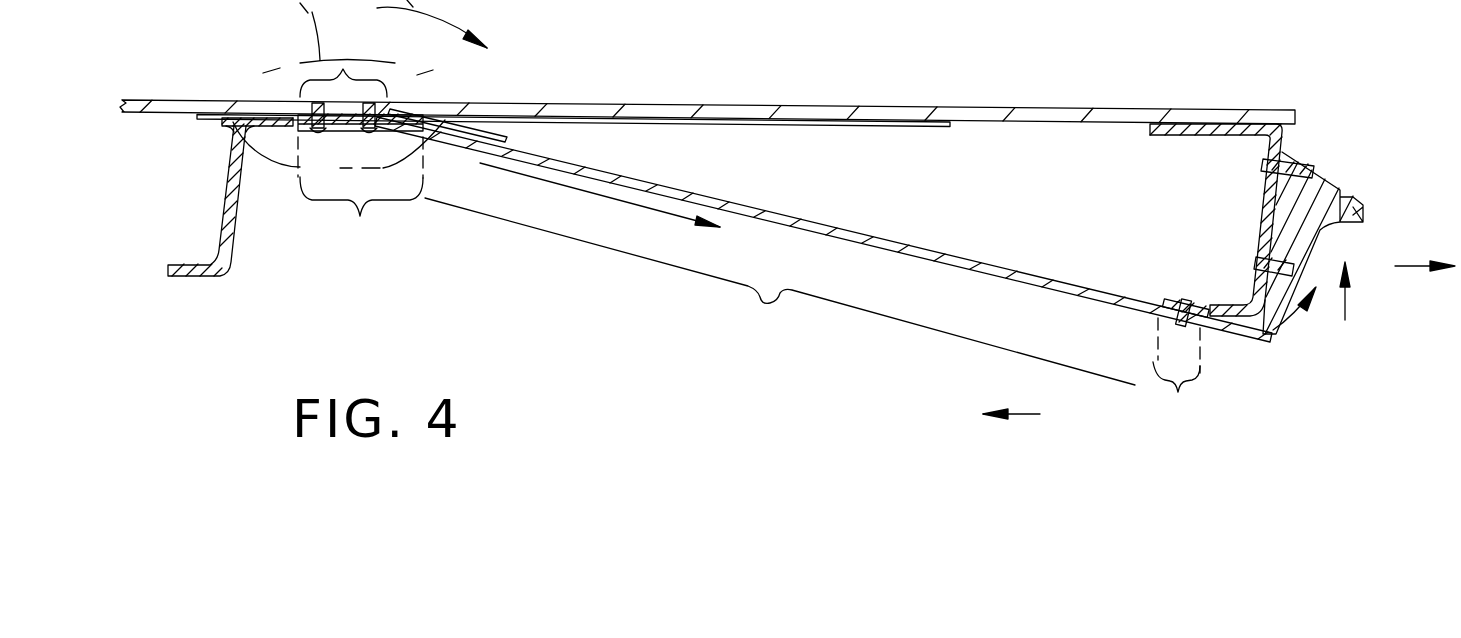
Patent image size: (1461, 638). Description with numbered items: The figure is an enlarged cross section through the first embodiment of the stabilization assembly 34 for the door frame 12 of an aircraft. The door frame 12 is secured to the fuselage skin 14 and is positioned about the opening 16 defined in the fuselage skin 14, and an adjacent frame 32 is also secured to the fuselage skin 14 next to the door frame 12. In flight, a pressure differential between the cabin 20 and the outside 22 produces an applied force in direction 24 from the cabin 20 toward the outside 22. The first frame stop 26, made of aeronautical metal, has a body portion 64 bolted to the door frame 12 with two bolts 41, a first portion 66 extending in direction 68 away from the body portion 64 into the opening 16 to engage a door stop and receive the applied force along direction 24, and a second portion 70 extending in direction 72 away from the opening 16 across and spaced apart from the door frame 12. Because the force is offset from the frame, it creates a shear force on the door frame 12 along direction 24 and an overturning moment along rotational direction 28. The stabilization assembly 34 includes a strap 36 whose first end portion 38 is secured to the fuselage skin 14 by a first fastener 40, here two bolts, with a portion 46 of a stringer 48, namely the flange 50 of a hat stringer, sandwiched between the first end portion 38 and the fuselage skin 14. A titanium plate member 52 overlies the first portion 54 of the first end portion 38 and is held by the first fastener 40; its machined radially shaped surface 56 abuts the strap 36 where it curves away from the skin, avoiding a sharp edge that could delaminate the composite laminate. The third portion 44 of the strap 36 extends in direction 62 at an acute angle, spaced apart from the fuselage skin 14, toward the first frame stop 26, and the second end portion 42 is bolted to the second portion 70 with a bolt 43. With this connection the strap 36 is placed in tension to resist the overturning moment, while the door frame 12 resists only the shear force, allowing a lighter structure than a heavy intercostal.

The door frame 12 is at (1305, 190).
The fuselage skin 14 is at (712, 112).
The opening 16 is at (1433, 225).
The cabin 20 is at (607, 333).
The outside 22 is at (603, 20).
The direction 24 is at (1345, 320).
The first frame stop 26 is at (1352, 163).
The rotational direction 28 is at (1250, 328).
The adjacent frame 32 is at (228, 262).
The stabilization assembly 34 is at (772, 242).
The strap 36 is at (987, 270).
The first end portion 38 is at (360, 216).
The first fastener 40 is at (296, 114).
The bolt 41 is at (1270, 172).
The second end portion 42 is at (1178, 392).
The bolt 43 is at (1190, 335).
The third portion 44 is at (765, 302).
The portion 46 is at (397, 106).
The stringer 48 is at (654, 126).
The flange 50 is at (587, 117).
The plate member 52 is at (340, 133).
The first portion 54 is at (300, 63).
The radially shaped surface 56 is at (447, 118).
The direction 62 is at (620, 199).
The body portion 64 is at (1286, 244).
The first portion 66 is at (1343, 197).
The direction 68 is at (1413, 267).
The second portion 70 is at (1240, 337).
The direction 72 is at (1028, 416).